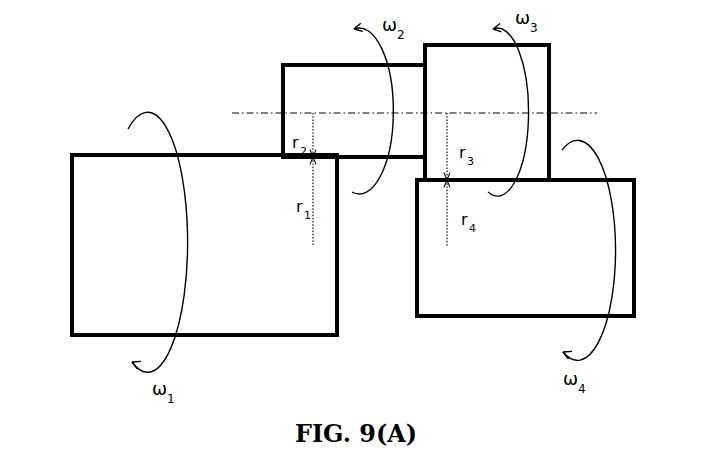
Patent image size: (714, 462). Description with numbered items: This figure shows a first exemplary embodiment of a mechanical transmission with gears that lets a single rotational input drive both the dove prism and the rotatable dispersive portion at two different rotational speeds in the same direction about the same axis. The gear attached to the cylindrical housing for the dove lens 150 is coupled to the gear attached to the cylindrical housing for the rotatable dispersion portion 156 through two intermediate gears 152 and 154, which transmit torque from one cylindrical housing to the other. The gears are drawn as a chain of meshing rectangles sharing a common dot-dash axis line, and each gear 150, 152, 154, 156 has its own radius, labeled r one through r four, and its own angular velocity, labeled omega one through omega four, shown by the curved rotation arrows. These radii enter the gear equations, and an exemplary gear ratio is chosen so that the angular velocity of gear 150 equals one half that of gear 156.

The gear attached to cylindrical housing for dove lens 150 is at (204, 245).
The first intermediate gear 152 is at (354, 111).
The second intermediate gear 154 is at (487, 112).
The gear attached to cylindrical housing for rotatable dispersion portion 156 is at (525, 248).